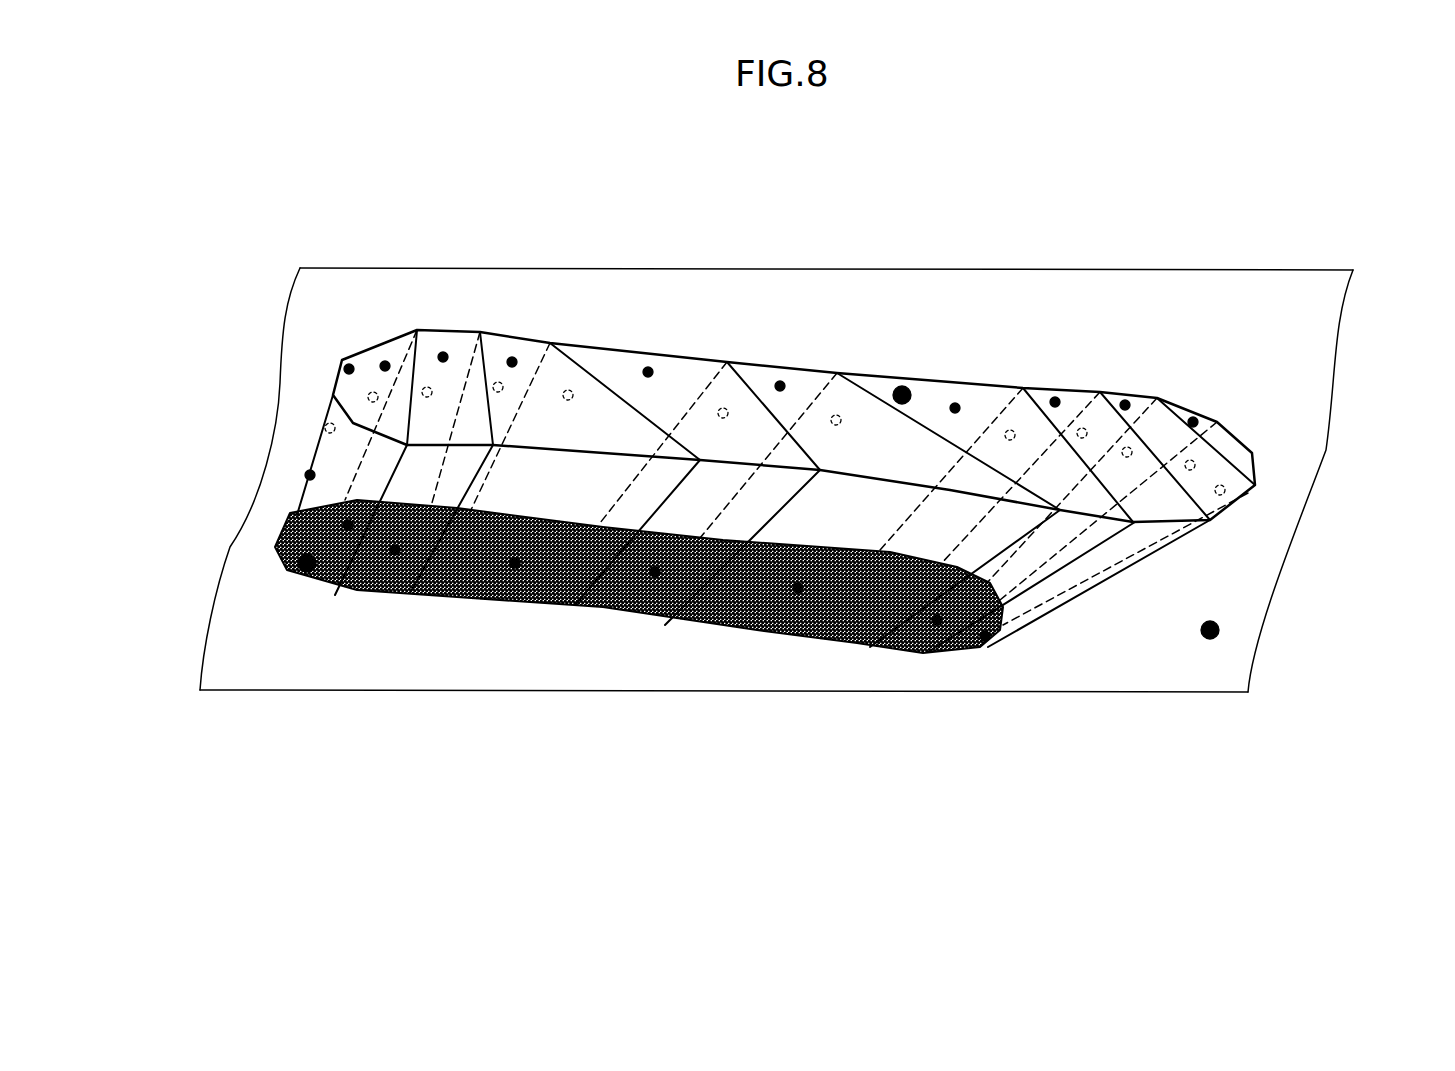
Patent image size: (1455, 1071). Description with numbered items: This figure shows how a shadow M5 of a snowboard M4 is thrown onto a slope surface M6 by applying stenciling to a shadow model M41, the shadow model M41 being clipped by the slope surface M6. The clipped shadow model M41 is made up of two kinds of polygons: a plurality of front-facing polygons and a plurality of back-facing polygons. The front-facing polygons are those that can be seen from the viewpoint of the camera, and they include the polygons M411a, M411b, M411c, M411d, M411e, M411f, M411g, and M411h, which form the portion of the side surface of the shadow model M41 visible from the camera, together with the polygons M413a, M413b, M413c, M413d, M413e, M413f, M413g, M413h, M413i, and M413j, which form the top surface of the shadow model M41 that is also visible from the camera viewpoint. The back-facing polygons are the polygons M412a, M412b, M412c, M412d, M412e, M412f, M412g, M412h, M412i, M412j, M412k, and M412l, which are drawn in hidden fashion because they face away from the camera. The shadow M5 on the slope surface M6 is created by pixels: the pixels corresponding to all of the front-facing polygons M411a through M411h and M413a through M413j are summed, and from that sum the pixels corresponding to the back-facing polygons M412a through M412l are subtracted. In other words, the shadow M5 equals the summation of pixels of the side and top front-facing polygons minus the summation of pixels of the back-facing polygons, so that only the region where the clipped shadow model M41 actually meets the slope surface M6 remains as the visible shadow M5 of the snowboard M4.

The snowboard M4 is at (912, 380).
The shadow model M41 is at (1150, 576).
The shadow M5 is at (308, 575).
The slope surface M6 is at (1220, 631).
The front-facing polygon M411a is at (308, 474).
The front-facing polygon M411b is at (347, 532).
The front-facing polygon M411c is at (395, 556).
The front-facing polygon M411d is at (515, 570).
The front-facing polygon M411e is at (655, 578).
The front-facing polygon M411f is at (796, 594).
The front-facing polygon M411g is at (932, 627).
The front-facing polygon M411h is at (984, 645).
The back-facing polygon M412a is at (313, 505).
The back-facing polygon M412b is at (371, 390).
The back-facing polygon M412c is at (428, 385).
The back-facing polygon M412d is at (499, 381).
The back-facing polygon M412e is at (570, 389).
The back-facing polygon M412f is at (723, 407).
The back-facing polygon M412g is at (836, 414).
The back-facing polygon M412h is at (1009, 429).
The back-facing polygon M412i is at (1082, 427).
The back-facing polygon M412j is at (1128, 446).
The back-facing polygon M412k is at (1191, 459).
The back-facing polygon M412l is at (1226, 487).
The front-facing top-surface polygon M413a is at (349, 362).
The front-facing top-surface polygon M413b is at (385, 360).
The front-facing top-surface polygon M413c is at (443, 352).
The front-facing top-surface polygon M413d is at (514, 355).
The front-facing top-surface polygon M413e is at (648, 366).
The front-facing top-surface polygon M413f is at (780, 380).
The front-facing top-surface polygon M413g is at (953, 400).
The front-facing top-surface polygon M413h is at (1055, 396).
The front-facing top-surface polygon M413i is at (1124, 396).
The front-facing top-surface polygon M413j is at (1194, 416).